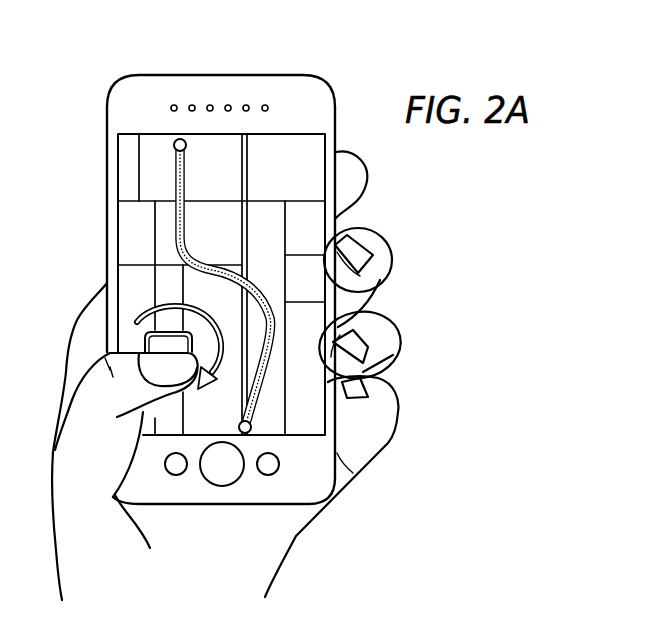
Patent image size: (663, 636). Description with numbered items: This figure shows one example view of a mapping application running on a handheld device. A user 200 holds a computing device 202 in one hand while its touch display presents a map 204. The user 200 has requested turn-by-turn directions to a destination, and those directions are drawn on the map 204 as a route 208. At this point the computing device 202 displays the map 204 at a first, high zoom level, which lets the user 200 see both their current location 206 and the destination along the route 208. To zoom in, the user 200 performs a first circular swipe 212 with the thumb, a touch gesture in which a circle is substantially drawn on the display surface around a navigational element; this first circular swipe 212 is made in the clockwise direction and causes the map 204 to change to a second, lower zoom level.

The user 200 is at (67, 365).
The computing device 202 is at (282, 75).
The map 204 is at (262, 382).
The current location 206 is at (251, 429).
The route 208 is at (175, 190).
The first circular swipe 212 is at (172, 308).